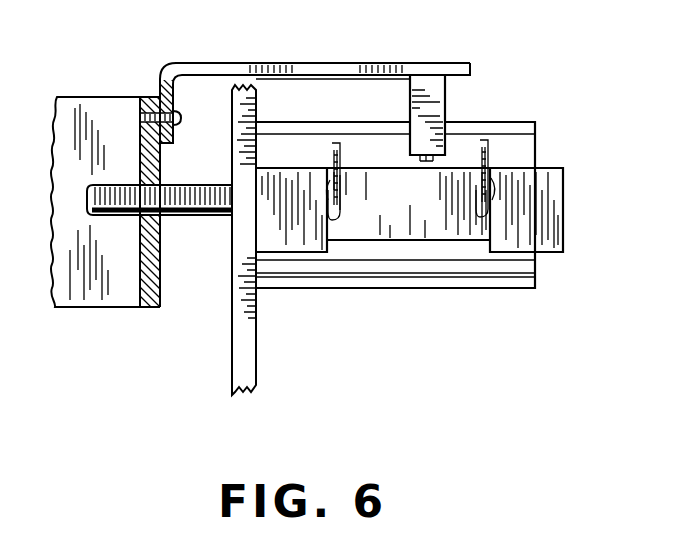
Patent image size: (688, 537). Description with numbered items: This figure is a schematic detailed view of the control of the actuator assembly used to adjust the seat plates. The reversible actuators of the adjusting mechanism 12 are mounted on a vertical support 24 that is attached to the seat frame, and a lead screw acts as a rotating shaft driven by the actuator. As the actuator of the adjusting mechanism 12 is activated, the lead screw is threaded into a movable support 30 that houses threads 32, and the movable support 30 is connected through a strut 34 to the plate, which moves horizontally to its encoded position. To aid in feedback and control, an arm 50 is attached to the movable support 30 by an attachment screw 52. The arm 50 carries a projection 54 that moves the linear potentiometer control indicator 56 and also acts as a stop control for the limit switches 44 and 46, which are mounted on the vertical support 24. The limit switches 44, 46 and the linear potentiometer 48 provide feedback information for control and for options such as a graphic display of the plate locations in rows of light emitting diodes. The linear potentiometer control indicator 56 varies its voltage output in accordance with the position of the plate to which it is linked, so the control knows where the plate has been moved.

The adjusting mechanism actuators 12 is at (510, 267).
The vertical support 24 is at (257, 103).
The movable support 30 is at (155, 310).
The threads 32 is at (140, 216).
The strut 34 is at (80, 96).
The limit switch 44 is at (548, 202).
The limit switch 46 is at (278, 240).
The linear potentiometer 48 is at (460, 227).
The arm 50 is at (338, 63).
The attachment screw 52 is at (182, 116).
The projection 54 is at (435, 100).
The linear potentiometer control indicator 56 is at (407, 159).